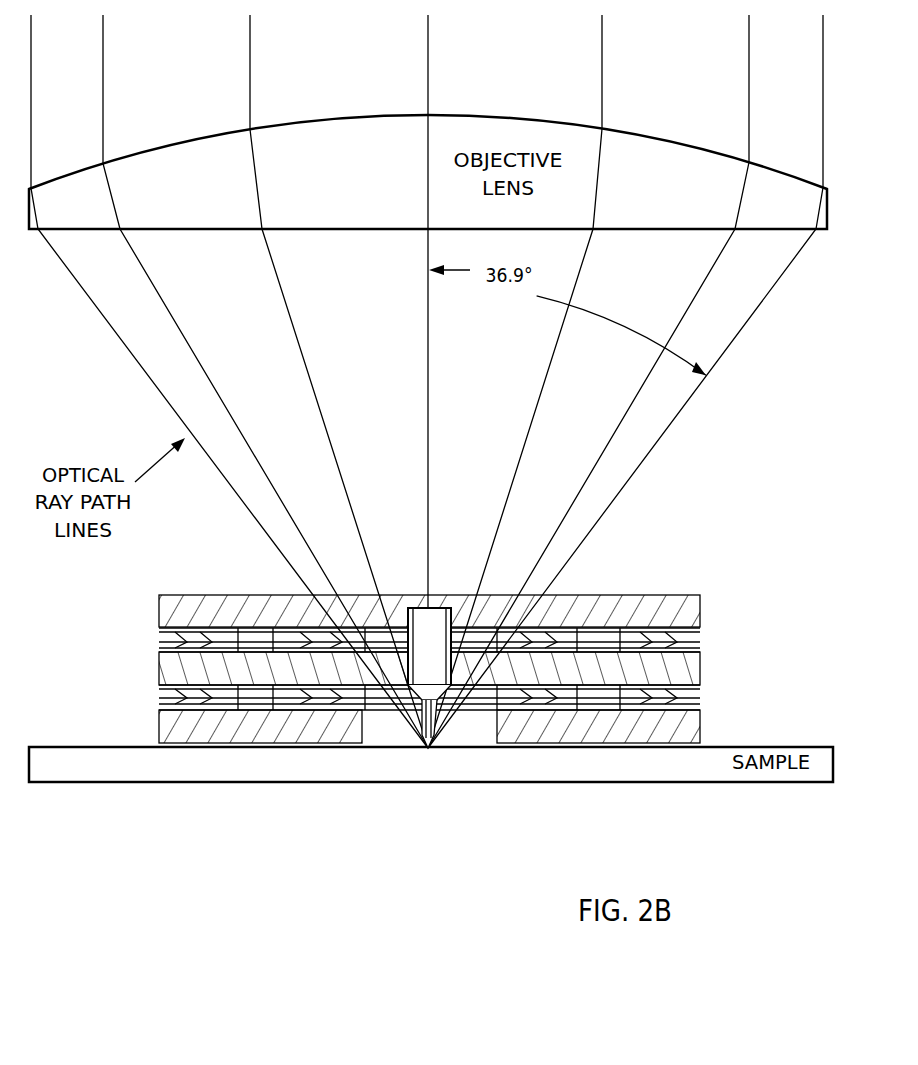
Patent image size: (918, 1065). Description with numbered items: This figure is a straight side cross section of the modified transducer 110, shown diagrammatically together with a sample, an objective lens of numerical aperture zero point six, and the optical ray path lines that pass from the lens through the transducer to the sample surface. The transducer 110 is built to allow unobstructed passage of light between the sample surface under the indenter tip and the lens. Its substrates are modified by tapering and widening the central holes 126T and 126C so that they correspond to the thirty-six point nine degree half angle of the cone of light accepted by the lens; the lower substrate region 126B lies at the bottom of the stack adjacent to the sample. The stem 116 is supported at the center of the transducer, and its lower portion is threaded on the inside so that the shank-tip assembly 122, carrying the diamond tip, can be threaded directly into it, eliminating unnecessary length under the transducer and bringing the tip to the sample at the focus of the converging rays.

The transducer 110 is at (465, 684).
The stem 116 is at (408, 612).
The shank-tip assembly 122 is at (418, 737).
The central hole of top substrate 126T is at (560, 598).
The central hole of center substrate 126C is at (517, 657).
The bottom stage layer 126B is at (495, 723).